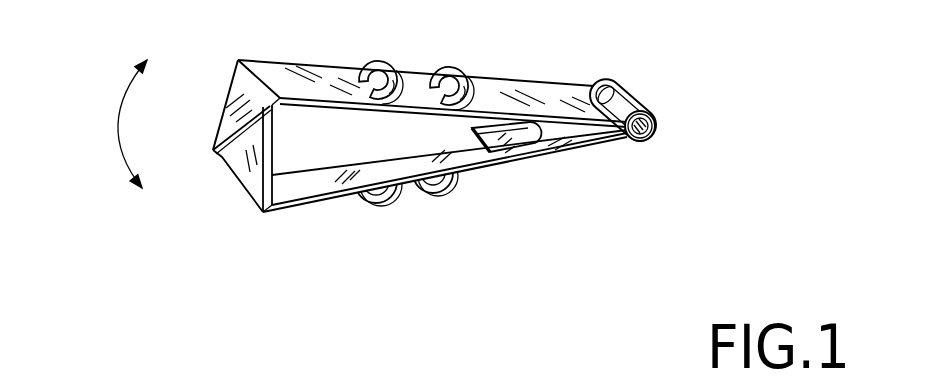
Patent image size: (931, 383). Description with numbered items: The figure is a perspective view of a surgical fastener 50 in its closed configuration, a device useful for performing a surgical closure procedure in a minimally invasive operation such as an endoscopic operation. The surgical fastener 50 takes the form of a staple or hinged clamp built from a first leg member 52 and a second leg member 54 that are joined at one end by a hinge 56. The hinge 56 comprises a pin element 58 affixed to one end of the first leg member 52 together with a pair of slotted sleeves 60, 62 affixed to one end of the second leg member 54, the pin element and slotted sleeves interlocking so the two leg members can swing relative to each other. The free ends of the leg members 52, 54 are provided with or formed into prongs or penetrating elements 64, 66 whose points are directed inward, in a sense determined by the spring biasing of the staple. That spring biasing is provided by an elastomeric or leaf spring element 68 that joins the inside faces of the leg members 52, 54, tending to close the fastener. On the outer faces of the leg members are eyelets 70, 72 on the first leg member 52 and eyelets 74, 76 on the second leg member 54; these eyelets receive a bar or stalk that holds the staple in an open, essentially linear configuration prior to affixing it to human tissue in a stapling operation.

The surgical fastener 50 is at (578, 173).
The first leg member 52 is at (302, 205).
The second leg member 54 is at (265, 72).
The hinge 56 is at (682, 120).
The pin element 58 is at (627, 110).
The slotted sleeve 60 is at (645, 148).
The slotted sleeve 62 is at (594, 78).
The penetrating element 64 is at (233, 158).
The penetrating element 66 is at (237, 88).
The spring element 68 is at (483, 155).
The eyelet 70 is at (380, 203).
The eyelet 72 is at (453, 187).
The eyelet 74 is at (377, 62).
The eyelet 76 is at (452, 63).